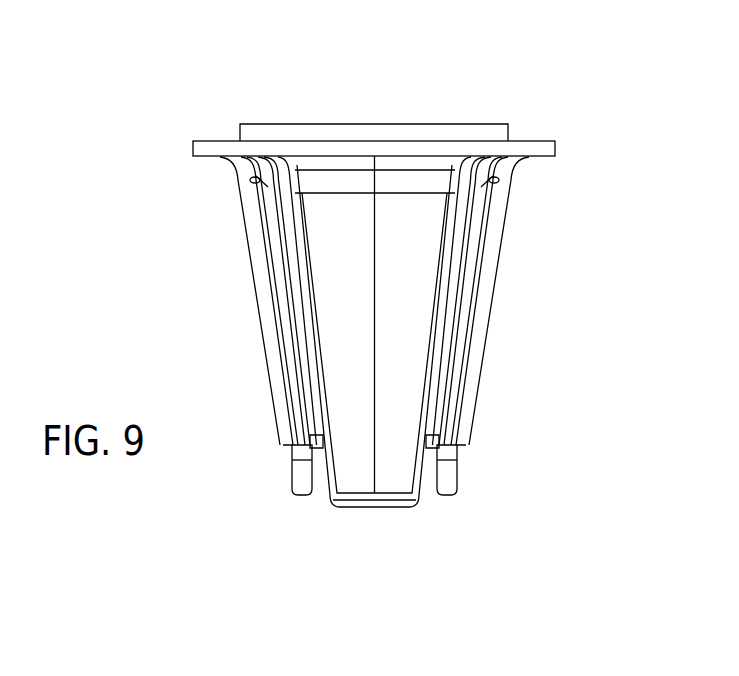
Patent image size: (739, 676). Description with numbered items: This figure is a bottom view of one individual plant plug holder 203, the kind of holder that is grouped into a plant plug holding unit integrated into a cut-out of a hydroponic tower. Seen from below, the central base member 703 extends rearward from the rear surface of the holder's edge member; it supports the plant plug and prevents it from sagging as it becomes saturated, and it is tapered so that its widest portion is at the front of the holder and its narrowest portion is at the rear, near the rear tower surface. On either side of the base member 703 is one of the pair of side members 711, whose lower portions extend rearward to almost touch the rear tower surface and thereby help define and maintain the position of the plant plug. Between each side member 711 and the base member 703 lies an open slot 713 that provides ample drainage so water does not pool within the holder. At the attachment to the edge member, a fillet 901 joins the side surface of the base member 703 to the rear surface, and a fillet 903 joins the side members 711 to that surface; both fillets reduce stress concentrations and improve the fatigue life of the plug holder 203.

The individual plant plug holder 203 is at (586, 104).
The base member 703 is at (407, 380).
The side members 711 is at (257, 308).
The open slot 713 is at (314, 511).
The fillet 901 is at (255, 186).
The fillet 903 is at (241, 179).